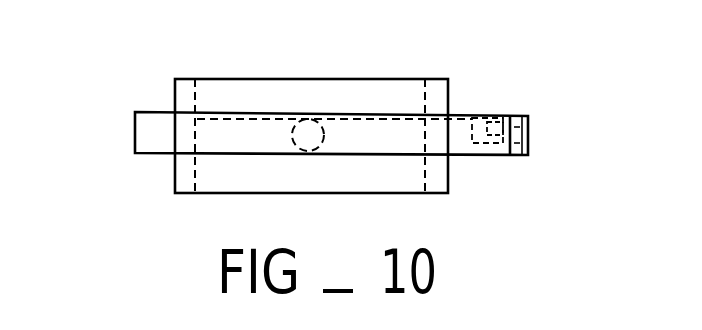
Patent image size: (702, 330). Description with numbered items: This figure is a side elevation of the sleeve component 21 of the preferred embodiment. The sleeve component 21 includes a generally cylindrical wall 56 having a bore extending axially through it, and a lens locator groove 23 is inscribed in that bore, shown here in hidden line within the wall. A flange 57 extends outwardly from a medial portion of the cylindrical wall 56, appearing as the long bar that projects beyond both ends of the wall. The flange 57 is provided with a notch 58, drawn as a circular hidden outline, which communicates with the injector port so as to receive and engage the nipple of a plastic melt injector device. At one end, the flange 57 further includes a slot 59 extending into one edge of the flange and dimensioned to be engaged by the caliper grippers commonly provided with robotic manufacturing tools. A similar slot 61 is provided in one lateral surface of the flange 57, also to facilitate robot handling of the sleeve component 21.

The sleeve component 21 is at (110, 121).
The lens locator groove 23 is at (392, 117).
The cylindrical wall 56 is at (175, 93).
The flange 57 is at (135, 145).
The notch 58 is at (290, 143).
The slot 59 is at (528, 132).
The slot 61 is at (480, 118).